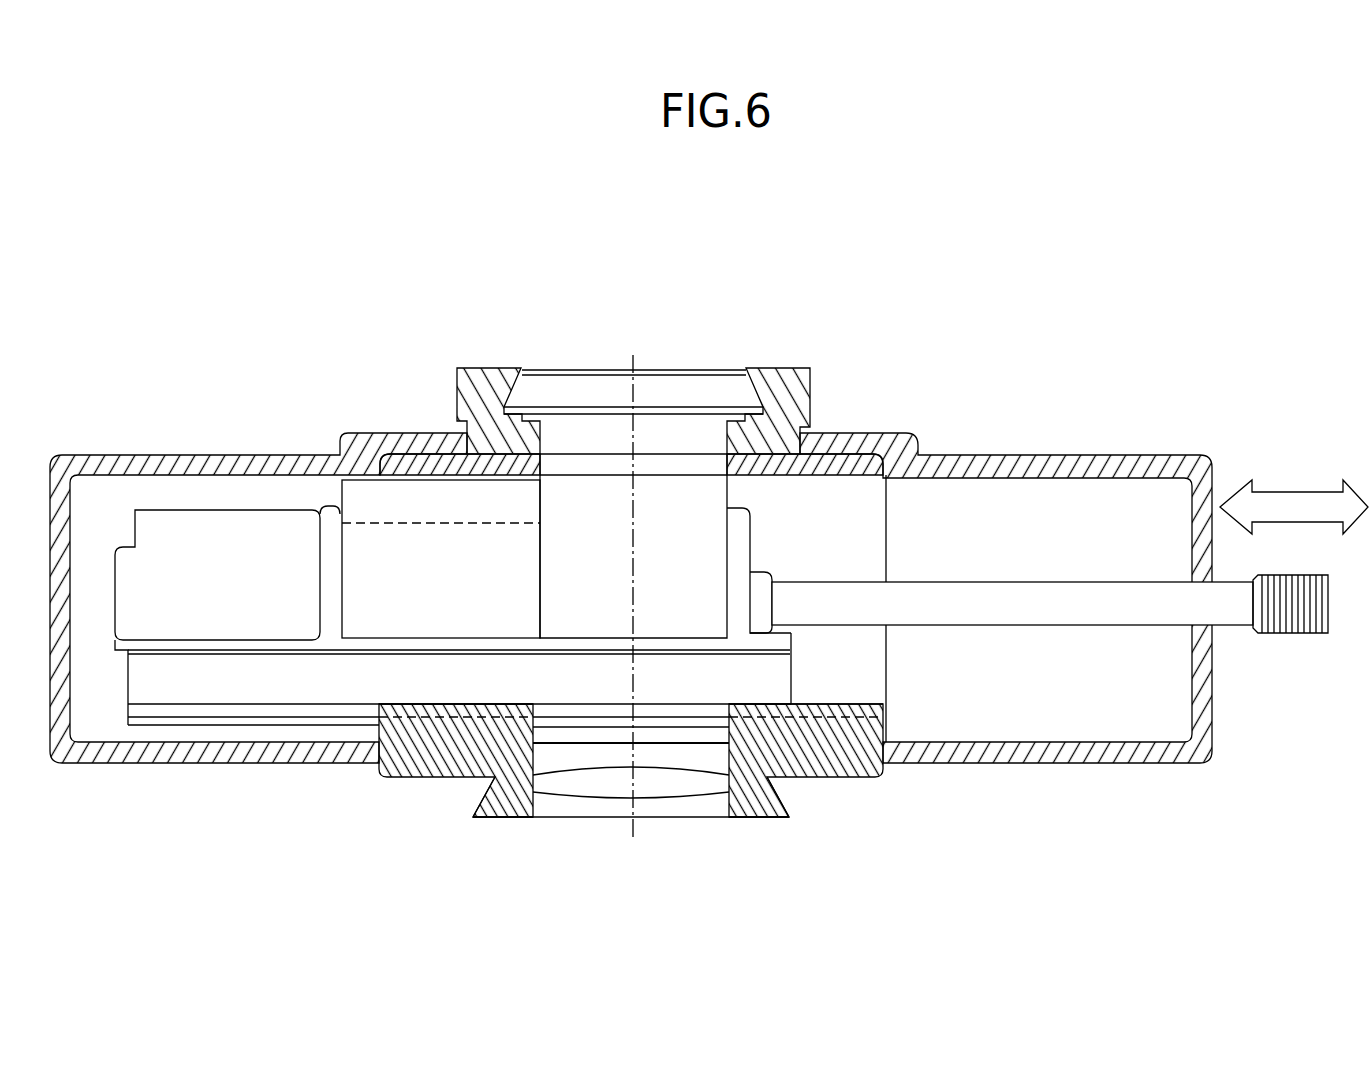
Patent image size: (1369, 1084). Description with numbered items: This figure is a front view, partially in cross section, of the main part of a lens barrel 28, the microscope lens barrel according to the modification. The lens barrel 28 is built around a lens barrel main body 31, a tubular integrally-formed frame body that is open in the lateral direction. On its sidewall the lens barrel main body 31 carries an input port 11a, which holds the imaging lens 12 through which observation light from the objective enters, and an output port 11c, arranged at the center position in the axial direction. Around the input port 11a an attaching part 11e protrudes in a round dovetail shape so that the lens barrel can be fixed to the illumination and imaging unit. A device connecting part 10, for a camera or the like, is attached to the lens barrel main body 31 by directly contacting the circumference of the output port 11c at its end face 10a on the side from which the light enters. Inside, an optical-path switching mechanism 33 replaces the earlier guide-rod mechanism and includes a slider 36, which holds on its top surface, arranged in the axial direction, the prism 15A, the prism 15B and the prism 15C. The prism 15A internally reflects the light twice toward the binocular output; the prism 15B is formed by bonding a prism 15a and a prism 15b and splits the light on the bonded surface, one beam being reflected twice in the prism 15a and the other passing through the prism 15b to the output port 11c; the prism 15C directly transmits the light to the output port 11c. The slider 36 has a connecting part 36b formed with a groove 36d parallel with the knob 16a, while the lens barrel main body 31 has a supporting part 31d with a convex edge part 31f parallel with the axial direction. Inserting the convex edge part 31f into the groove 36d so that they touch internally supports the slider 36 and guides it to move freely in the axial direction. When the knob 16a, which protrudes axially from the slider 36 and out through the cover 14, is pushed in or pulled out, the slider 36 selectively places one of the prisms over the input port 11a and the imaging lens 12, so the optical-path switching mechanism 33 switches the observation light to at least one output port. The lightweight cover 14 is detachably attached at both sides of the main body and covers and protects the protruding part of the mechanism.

The lens barrel 28 is at (752, 277).
The cover 14 is at (107, 455).
The prism 15C is at (205, 510).
The prism 15B is at (285, 363).
The prism 15a is at (336, 493).
The prism 15b is at (365, 523).
The device connecting part 10 is at (770, 368).
The end face 10a is at (491, 460).
The output port 11c is at (652, 463).
The prism 15A is at (703, 480).
The optical-path switching mechanism 33 is at (780, 562).
The knob 16a is at (968, 582).
The slider 36 is at (790, 647).
The connecting part 36b is at (121, 688).
The groove 36d is at (247, 712).
The imaging lens 12 is at (563, 793).
The lens barrel main body 31 is at (803, 780).
The convex edge part 31f is at (402, 712).
The supporting part 31d is at (452, 771).
The attaching part 11e is at (503, 818).
The input port 11a is at (710, 808).